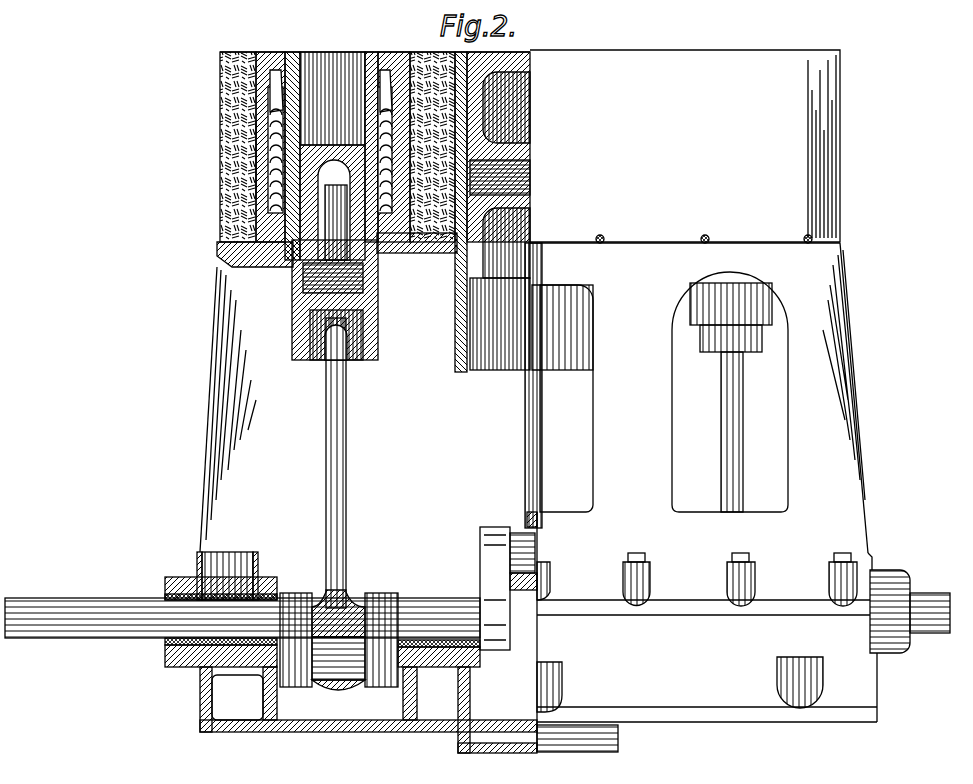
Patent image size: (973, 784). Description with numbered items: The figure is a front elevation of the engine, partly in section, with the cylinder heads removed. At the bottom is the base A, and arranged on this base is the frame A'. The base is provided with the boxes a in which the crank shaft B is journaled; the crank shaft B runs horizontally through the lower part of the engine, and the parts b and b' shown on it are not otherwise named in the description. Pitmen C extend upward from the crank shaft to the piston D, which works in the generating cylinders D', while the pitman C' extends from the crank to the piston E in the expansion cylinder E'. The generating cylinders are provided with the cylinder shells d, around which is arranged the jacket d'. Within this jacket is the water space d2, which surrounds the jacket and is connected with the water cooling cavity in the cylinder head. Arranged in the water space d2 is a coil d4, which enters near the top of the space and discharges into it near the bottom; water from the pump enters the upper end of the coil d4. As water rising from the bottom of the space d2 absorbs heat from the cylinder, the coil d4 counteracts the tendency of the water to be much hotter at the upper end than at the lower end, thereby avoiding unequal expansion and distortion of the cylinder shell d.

The base A is at (516, 494).
The frame A' is at (511, 301).
The boxes a is at (167, 665).
The crank shaft B is at (422, 603).
The crank collar b is at (339, 622).
The disc b' is at (502, 564).
The pitmen C is at (557, 440).
The pitman C' is at (536, 385).
The piston D is at (297, 300).
The generating cylinders D' is at (375, 140).
The cylinder shells d is at (361, 195).
The jacket d' is at (337, 130).
The water space d2 is at (275, 110).
The coil d4 is at (277, 145).
The piston E is at (515, 149).
The expansion cylinder E' is at (453, 301).